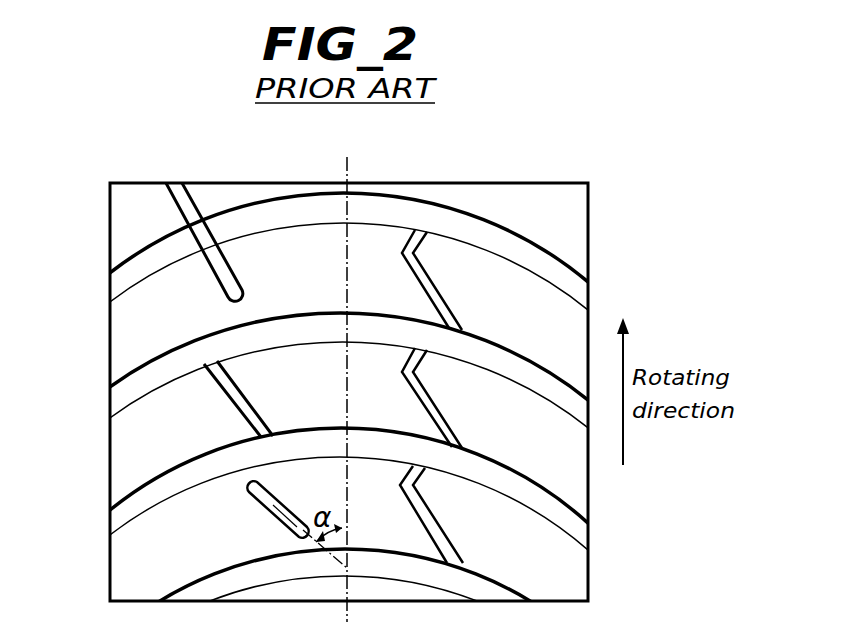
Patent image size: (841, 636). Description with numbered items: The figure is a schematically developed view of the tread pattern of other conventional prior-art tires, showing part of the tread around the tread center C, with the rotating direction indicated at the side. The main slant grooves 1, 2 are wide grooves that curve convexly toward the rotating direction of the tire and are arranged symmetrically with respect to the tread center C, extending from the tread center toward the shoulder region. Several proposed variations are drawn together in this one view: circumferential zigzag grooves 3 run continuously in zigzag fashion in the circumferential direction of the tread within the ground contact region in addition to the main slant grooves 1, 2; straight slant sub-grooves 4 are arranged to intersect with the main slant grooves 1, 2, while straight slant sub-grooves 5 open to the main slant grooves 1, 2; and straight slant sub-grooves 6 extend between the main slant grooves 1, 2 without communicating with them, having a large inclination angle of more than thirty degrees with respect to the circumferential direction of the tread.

The main slant groove 1 is at (133, 262).
The main slant groove 2 is at (482, 228).
The circumferential zigzag groove 3 is at (440, 298).
The slant sub-groove 4 is at (186, 203).
The slant sub-groove 5 is at (237, 402).
The slant sub-groove 6 is at (252, 493).
The tread center C is at (349, 374).